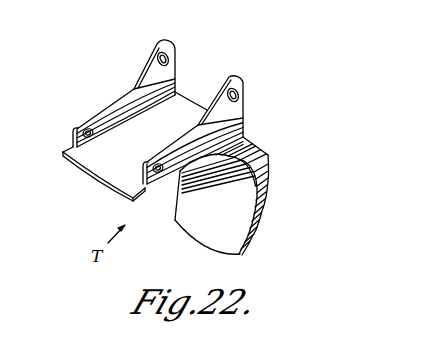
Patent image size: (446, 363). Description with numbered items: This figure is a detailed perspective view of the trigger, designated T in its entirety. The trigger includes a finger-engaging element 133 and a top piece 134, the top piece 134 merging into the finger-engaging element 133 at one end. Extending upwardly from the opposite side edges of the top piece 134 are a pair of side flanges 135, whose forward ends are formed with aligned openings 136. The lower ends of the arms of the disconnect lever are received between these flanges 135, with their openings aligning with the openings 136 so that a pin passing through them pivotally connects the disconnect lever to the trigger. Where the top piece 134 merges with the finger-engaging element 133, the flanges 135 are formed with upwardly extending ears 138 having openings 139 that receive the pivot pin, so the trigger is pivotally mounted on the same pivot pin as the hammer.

The finger-engaging element 133 is at (262, 188).
The top piece 134 is at (110, 171).
The side flanges 135 is at (121, 106).
The openings 136 is at (76, 132).
The ears 138 is at (166, 41).
The openings 139 is at (173, 56).